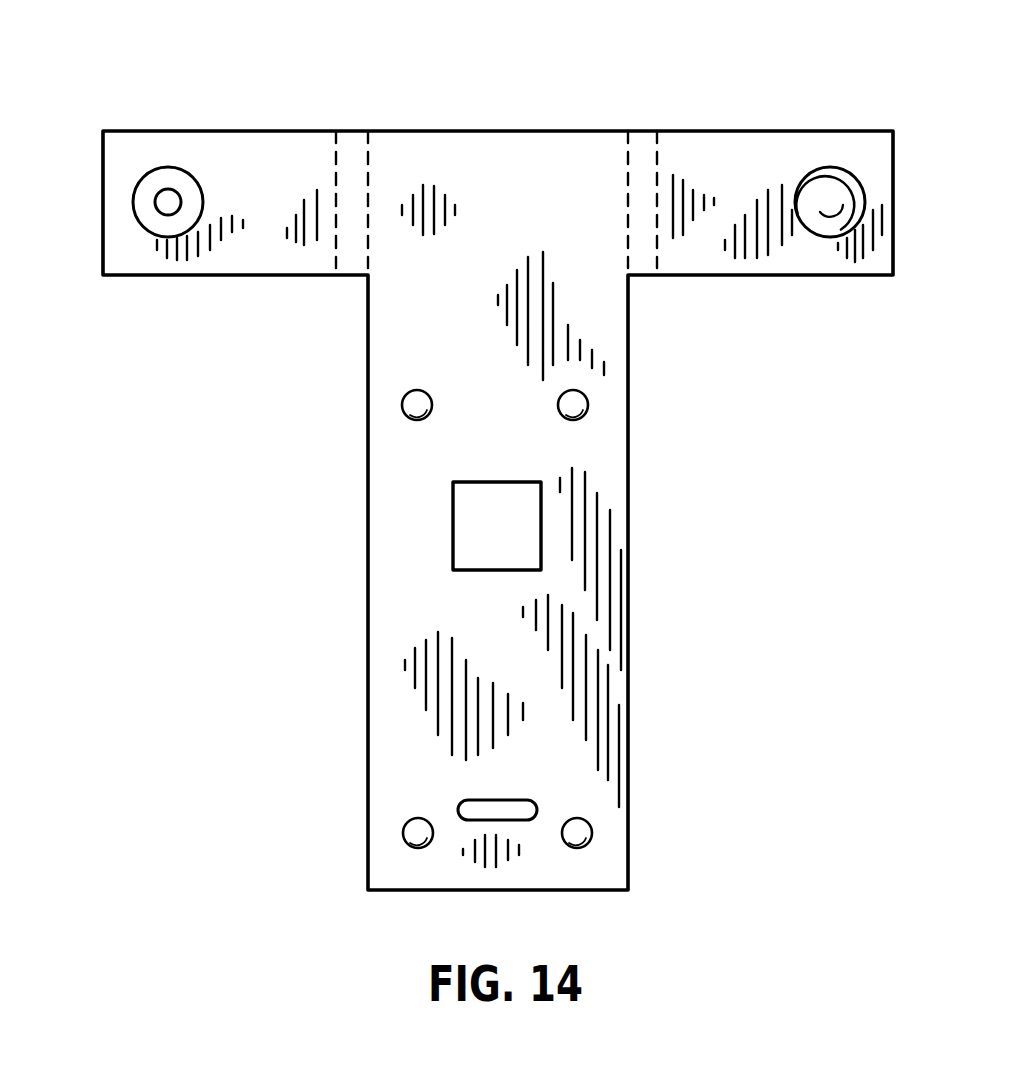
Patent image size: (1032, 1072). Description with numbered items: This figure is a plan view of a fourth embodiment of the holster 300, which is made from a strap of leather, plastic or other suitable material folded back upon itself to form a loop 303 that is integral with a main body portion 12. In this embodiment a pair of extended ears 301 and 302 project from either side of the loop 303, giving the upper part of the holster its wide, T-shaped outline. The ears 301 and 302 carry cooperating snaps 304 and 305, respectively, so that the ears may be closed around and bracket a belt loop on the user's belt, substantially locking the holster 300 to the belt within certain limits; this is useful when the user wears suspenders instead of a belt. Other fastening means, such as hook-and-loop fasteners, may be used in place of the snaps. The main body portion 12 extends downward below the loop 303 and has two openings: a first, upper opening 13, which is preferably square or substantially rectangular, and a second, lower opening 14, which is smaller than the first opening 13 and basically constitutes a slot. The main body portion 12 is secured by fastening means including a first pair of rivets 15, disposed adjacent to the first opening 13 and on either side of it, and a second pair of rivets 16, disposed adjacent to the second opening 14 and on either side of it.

The holster 300 is at (292, 519).
The extended ear 301 is at (246, 244).
The extended ear 302 is at (812, 250).
The loop 303 is at (512, 170).
The snap 304 is at (158, 167).
The snap 305 is at (823, 170).
The main body portion 12 is at (395, 585).
The first opening 13 is at (536, 535).
The second opening 14 is at (524, 805).
The first pair of rivets 15 is at (402, 410).
The second pair of rivets 16 is at (403, 838).